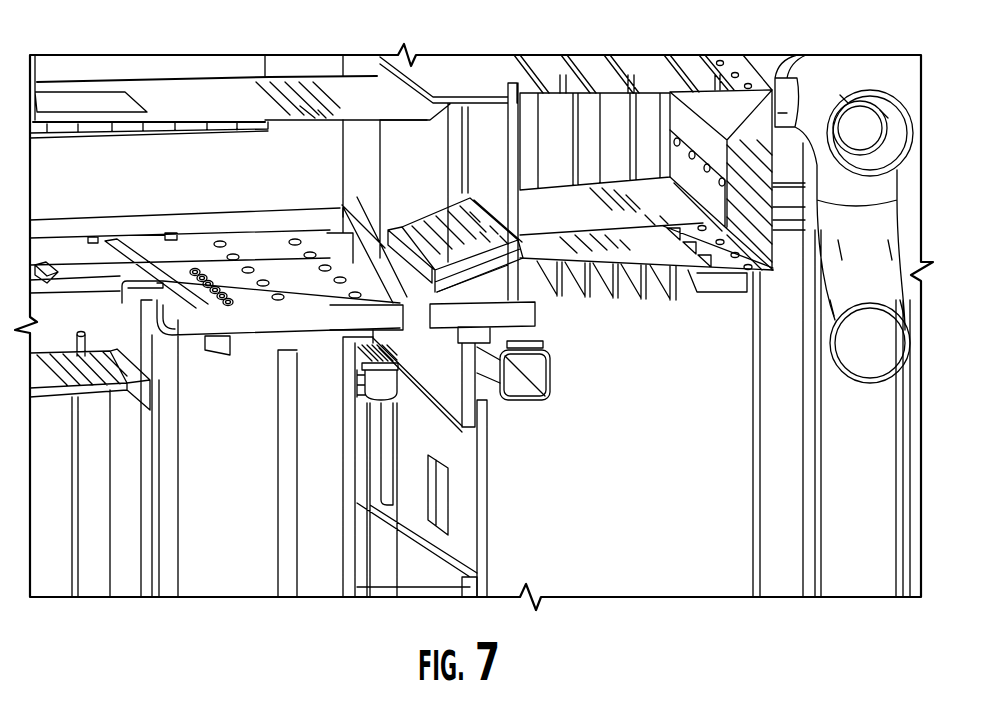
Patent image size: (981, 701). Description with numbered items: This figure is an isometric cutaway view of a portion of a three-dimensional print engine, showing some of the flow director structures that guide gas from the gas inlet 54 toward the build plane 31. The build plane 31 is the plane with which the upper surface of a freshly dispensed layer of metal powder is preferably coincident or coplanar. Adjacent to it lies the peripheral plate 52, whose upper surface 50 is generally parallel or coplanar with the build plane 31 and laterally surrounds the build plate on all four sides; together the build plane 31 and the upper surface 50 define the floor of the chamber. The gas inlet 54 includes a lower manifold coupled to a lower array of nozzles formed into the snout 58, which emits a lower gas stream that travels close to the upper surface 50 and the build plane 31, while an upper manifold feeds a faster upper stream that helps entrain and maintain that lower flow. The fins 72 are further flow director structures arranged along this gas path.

The build plane 31 is at (61, 312).
The upper surface 50 is at (277, 270).
The peripheral plate 52 is at (262, 320).
The gas inlet 54 is at (588, 172).
The snout 58 is at (400, 248).
The fins 72 is at (211, 268).